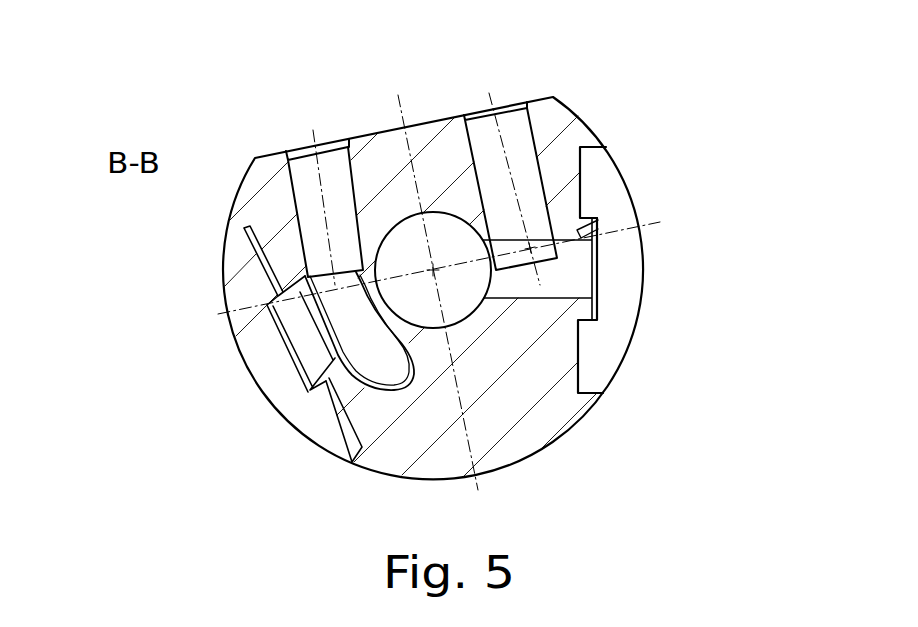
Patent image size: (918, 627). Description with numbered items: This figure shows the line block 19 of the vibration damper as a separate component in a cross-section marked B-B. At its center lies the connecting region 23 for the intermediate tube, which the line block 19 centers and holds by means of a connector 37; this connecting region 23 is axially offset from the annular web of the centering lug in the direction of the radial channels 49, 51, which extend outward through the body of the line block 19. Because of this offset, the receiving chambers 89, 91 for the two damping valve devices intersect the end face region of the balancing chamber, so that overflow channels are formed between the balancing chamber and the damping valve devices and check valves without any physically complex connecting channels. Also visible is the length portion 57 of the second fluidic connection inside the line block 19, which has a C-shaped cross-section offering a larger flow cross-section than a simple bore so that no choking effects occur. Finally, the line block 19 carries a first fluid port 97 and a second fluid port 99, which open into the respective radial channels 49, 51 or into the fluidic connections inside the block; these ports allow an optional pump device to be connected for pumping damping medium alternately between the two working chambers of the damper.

The line block 19 is at (590, 78).
The connecting region 23 is at (438, 214).
The second fluid port 99 is at (305, 153).
The first fluid port 97 is at (512, 143).
The receiving chamber 89 is at (593, 185).
The connector 37 is at (577, 232).
The radial channel 49 is at (552, 283).
The radial channel 51 is at (302, 338).
The length portion 57 is at (380, 357).
The receiving chamber 91 is at (330, 428).